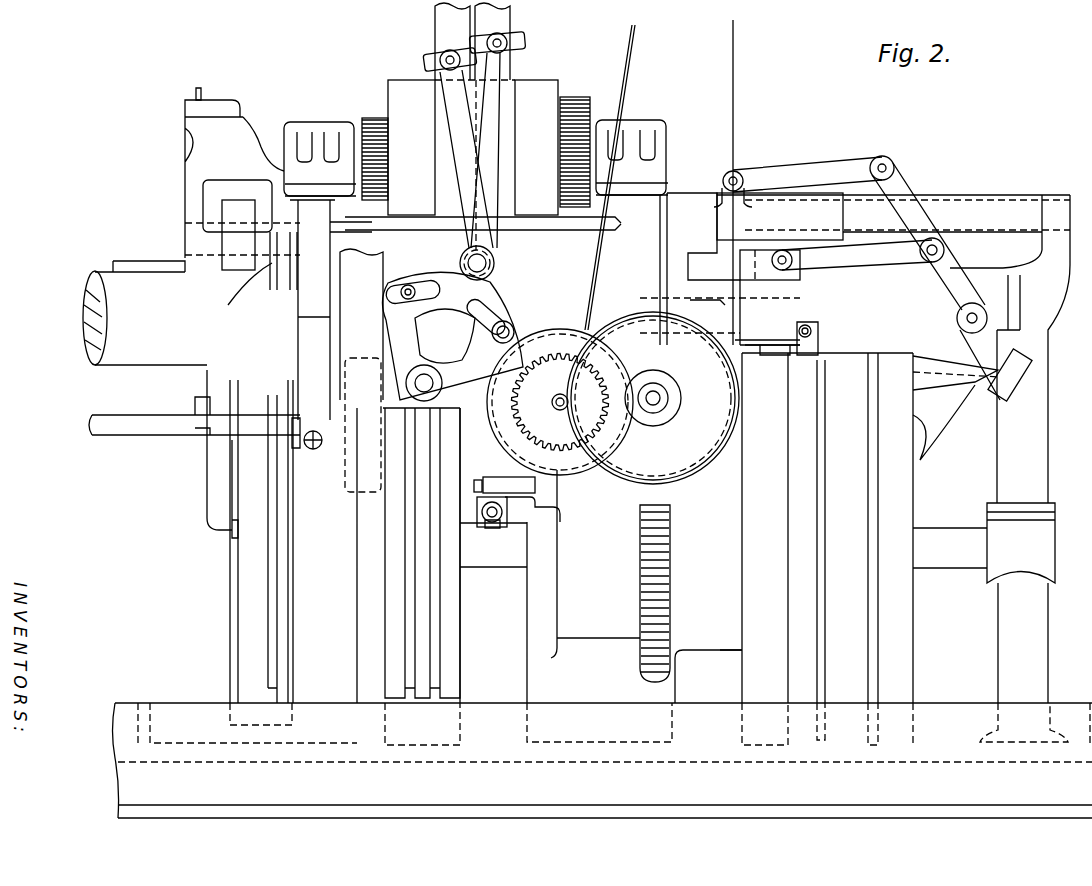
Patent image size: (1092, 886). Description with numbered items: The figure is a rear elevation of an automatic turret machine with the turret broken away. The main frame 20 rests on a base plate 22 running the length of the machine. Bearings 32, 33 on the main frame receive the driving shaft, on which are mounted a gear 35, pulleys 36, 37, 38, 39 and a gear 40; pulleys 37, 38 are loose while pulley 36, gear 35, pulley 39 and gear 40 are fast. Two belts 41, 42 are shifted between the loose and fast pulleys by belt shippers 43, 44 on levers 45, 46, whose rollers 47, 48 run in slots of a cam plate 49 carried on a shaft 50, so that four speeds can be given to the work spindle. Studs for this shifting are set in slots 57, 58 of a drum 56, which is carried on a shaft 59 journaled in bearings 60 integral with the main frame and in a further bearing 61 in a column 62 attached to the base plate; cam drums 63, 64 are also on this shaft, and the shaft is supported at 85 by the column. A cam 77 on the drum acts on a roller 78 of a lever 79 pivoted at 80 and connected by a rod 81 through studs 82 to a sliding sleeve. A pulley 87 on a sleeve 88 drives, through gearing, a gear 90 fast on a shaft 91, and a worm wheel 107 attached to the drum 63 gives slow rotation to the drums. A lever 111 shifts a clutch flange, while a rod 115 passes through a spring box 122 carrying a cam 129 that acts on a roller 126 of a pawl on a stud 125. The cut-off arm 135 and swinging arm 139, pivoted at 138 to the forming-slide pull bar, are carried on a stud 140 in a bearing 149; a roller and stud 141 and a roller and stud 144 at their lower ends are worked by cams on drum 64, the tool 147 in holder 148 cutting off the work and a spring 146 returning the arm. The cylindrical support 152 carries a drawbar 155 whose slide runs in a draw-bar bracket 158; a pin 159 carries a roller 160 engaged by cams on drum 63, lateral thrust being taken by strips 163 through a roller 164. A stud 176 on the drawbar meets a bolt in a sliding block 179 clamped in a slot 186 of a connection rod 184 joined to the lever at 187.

The main frame 20 is at (526, 364).
The base plate 22 is at (603, 760).
The bearing 32 is at (320, 130).
The bearing 33 is at (640, 125).
The gear 35 is at (372, 118).
The pulley 36 is at (392, 100).
The pulley 37 is at (432, 120).
The pulley 38 is at (516, 100).
The pulley 39 is at (530, 90).
The gear 40 is at (578, 98).
The belt 41 is at (492, 41).
The belt 42 is at (452, 41).
The belt shipper 43 is at (508, 40).
The belt shipper 44 is at (440, 55).
The lever 45 is at (481, 151).
The lever 46 is at (463, 150).
The roller 47 is at (508, 320).
The roller 48 is at (410, 289).
The cam plate 49 is at (452, 336).
The shaft 50 is at (426, 378).
The drum 56 is at (432, 553).
The slot 57 is at (435, 661).
The slot 58 is at (412, 661).
The shaft 59 is at (732, 548).
The bearing 60 is at (288, 586).
The bearing 61 is at (1030, 548).
The column 62 is at (1023, 643).
The cam drum 63 is at (816, 528).
The drum 64 is at (258, 549).
The cam 77 is at (930, 370).
The roller 78 is at (1020, 386).
The lever 79 is at (950, 275).
The pivot 80 is at (975, 305).
The rod 81 is at (855, 160).
The stud 82 is at (737, 172).
The shaft support 85 is at (894, 333).
The pulley 87 is at (690, 474).
The sleeve 88 is at (648, 406).
The gear 90 is at (516, 406).
The shaft 91 is at (556, 404).
The worm wheel 107 is at (670, 665).
The lever 111 is at (548, 512).
The rod 115 is at (505, 515).
The spring box 122 is at (497, 518).
The stud 125 is at (505, 485).
The roller 126 is at (478, 480).
The cam 129 is at (508, 500).
The cut-off arm 135 is at (234, 401).
The pivot 138 is at (200, 405).
The swinging arm 139 is at (232, 276).
The stud 140 is at (218, 225).
The roller and stud 141 is at (232, 535).
The roller and stud 144 is at (292, 455).
The spring 146 is at (313, 449).
The tool 147 is at (200, 88).
The holder 148 is at (224, 110).
The bearing 149 is at (232, 220).
The cylindrical support 152 is at (151, 313).
The drawbar 155 is at (73, 300).
The draw-bar bracket 158 is at (708, 290).
The pin 159 is at (815, 340).
The roller 160 is at (810, 352).
The strip 163 is at (780, 336).
The roller 164 is at (792, 343).
The stud 176 is at (750, 262).
The sliding block 179 is at (770, 260).
The connection rod 184 is at (920, 235).
The slot 186 is at (905, 190).
The connection 187 is at (895, 255).